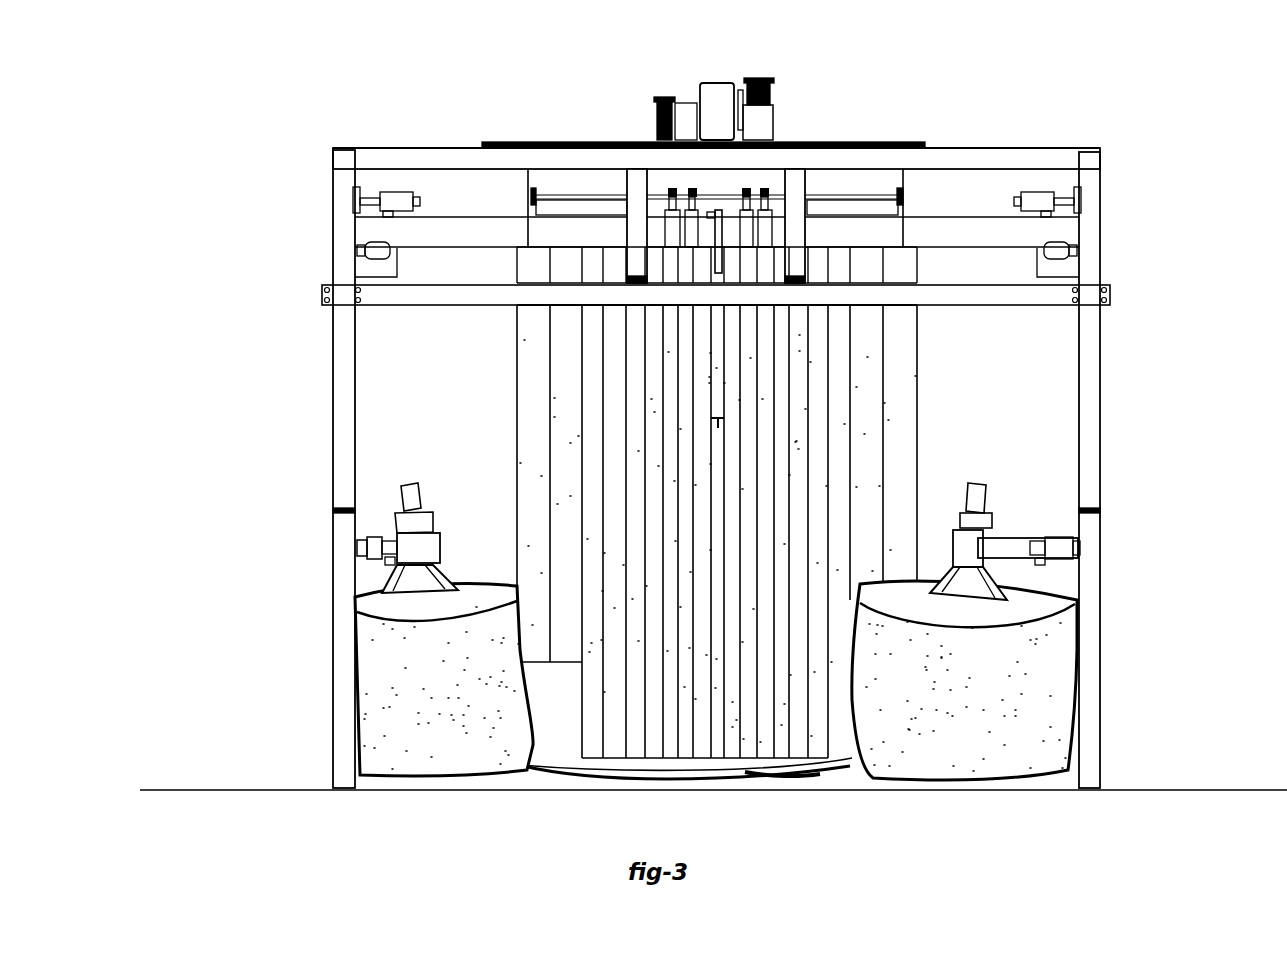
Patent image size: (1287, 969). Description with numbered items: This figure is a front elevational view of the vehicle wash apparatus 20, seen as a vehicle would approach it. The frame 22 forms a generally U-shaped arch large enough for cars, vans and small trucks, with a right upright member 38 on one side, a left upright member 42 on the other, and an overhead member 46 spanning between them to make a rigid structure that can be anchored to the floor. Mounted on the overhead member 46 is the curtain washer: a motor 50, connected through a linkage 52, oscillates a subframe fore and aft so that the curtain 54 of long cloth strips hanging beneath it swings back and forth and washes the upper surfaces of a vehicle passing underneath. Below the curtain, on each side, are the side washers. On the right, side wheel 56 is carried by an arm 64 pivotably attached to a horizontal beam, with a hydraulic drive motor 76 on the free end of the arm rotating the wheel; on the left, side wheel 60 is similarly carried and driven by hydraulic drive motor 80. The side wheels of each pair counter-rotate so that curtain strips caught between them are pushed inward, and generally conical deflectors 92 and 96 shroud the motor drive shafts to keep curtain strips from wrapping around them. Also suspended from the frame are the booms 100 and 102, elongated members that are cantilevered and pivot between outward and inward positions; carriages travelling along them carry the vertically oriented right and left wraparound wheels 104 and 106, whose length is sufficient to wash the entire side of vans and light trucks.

The vehicle wash apparatus 20 is at (1150, 213).
The frame 22 is at (1027, 138).
The right upright member 38 is at (1100, 430).
The left upright member 42 is at (333, 338).
The overhead member 46 is at (423, 148).
The motor 50 is at (716, 83).
The linkage 52 is at (777, 128).
The curtain 54 is at (918, 378).
The side wheel 56 is at (1013, 760).
The side wheel 60 is at (375, 530).
The arm 64 is at (1010, 537).
The hydraulic drive motor 76 is at (979, 483).
The hydraulic drive motor 80 is at (422, 490).
The deflector 92 is at (1013, 577).
The deflector 96 is at (383, 577).
The boom 100 is at (968, 228).
The boom 102 is at (475, 220).
The right wraparound wheel 104 is at (855, 776).
The left wraparound wheel 106 is at (560, 747).